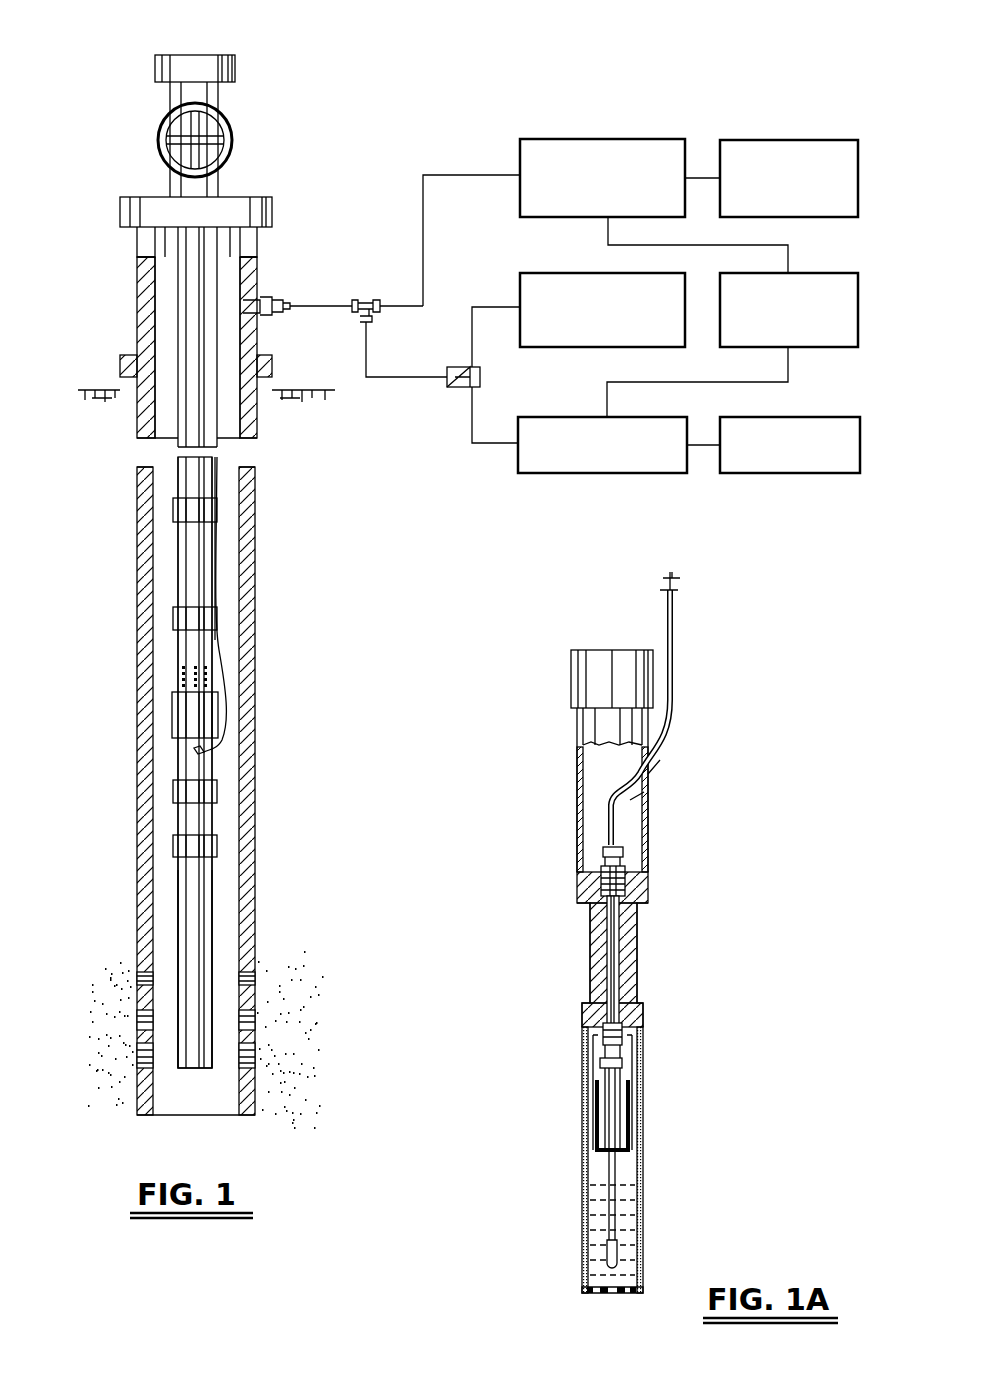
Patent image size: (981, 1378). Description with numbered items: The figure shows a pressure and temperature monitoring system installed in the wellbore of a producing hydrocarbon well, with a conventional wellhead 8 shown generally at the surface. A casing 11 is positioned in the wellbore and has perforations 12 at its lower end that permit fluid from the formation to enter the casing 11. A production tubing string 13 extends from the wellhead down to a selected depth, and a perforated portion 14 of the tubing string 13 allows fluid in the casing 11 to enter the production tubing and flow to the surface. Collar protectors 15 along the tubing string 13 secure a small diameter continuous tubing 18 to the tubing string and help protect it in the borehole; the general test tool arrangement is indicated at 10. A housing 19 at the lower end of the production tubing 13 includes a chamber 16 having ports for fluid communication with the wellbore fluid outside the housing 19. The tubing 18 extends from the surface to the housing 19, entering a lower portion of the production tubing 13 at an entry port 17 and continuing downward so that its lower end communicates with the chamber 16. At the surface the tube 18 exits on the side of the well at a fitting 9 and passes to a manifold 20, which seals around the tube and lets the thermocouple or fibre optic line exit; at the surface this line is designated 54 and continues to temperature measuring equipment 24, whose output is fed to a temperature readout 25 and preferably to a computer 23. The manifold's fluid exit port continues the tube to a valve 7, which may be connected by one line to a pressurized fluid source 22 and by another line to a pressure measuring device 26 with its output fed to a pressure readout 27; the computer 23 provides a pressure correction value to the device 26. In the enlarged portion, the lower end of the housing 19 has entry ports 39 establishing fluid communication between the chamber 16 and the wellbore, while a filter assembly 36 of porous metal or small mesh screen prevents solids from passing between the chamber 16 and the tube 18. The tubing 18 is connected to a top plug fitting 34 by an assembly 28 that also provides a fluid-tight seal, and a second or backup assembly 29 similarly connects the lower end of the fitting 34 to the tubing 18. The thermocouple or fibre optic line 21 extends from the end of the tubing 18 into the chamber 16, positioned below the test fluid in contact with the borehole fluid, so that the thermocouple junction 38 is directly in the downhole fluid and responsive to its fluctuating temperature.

In FIG. 1, the valve 7 is at (458, 392).
In FIG. 1, the wellhead 8 is at (247, 157).
In FIG. 1, the fitting 9 is at (291, 304).
In FIG. 1, the test tool assembly 10 is at (217, 620).
In FIG. 1, the casing 11 is at (247, 512).
In FIG. 1, the perforations 12 is at (137, 975).
In FIG. 1, the production tubing string 13 is at (200, 557).
In FIG. 1A, the production tubing string 13 is at (595, 727).
In FIG. 1, the perforated portion 14 is at (178, 682).
In FIG. 1, the collar protectors 15 is at (173, 508).
In FIG. 1A, the chamber 16 is at (628, 1192).
In FIG. 1, the entry port 17 is at (195, 752).
In FIG. 1A, the entry port 17 is at (650, 778).
In FIG. 1, the small diameter continuous tubing 18 is at (323, 305).
In FIG. 1A, the small diameter continuous tubing 18 is at (676, 659).
In FIG. 1, the housing 19 is at (200, 942).
In FIG. 1A, the housing 19 is at (580, 1210).
In FIG. 1, the manifold 20 is at (372, 312).
In FIG. 1A, the thermocouple or fibre optic line 21 is at (682, 582).
In FIG. 1, the pressurized fluid source 22 is at (550, 273).
In FIG. 1, the computer 23 is at (838, 273).
In FIG. 1, the temperature measuring equipment 24 is at (535, 139).
In FIG. 1, the temperature readout 25 is at (746, 140).
In FIG. 1, the pressure measuring device 26 is at (553, 473).
In FIG. 1, the pressure readout 27 is at (835, 417).
In FIG. 1A, the assembly 28 is at (645, 880).
In FIG. 1A, the second or backup assembly 29 is at (600, 1040).
In FIG. 1A, the top plug fitting 34 is at (600, 948).
In FIG. 1A, the filter assembly 36 is at (597, 1118).
In FIG. 1A, the thermocouple junction 38 is at (618, 1250).
In FIG. 1A, the entry ports 39 is at (613, 1295).
In FIG. 1, the thermocouple or fibre optic line at the surface 54 is at (423, 278).